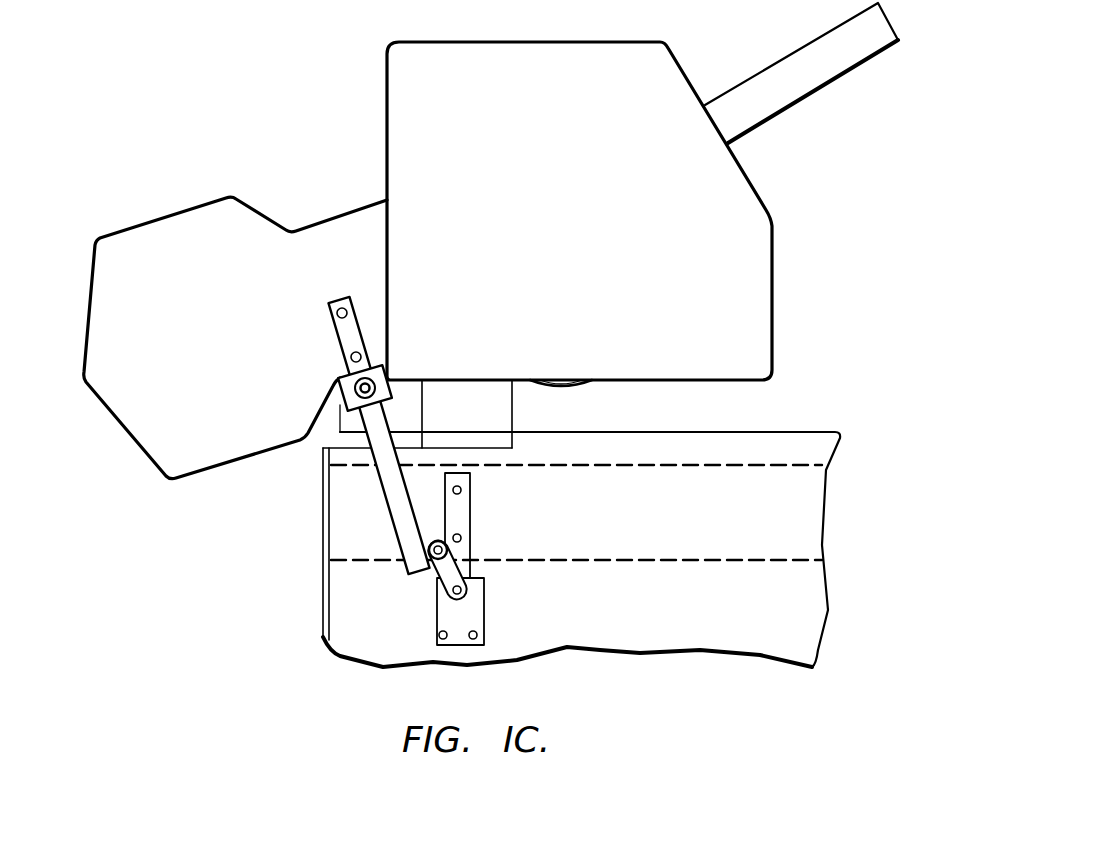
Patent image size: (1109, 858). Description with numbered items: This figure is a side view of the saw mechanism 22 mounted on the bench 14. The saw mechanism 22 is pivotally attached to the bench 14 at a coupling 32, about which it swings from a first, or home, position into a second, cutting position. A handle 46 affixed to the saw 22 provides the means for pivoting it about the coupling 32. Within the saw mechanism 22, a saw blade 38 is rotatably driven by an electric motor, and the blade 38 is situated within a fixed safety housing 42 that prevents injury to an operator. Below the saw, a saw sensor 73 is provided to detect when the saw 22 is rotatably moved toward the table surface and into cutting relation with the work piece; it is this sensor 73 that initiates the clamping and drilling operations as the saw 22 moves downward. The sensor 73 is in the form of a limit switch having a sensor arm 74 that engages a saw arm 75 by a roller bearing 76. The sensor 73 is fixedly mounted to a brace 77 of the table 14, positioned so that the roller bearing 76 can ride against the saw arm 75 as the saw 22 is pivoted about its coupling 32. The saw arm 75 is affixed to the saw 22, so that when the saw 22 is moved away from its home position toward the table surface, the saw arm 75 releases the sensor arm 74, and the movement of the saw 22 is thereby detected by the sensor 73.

The saw mechanism 22 is at (268, 94).
The safety housing 42 is at (675, 57).
The handle 46 is at (862, 65).
The saw blade 38 is at (582, 386).
The coupling 32 is at (340, 412).
The saw arm 75 is at (390, 517).
The roller bearing 76 is at (434, 540).
The sensor arm 74 is at (436, 577).
The saw sensor 73 is at (486, 602).
The bench 14 is at (323, 520).
The brace 77 is at (655, 562).